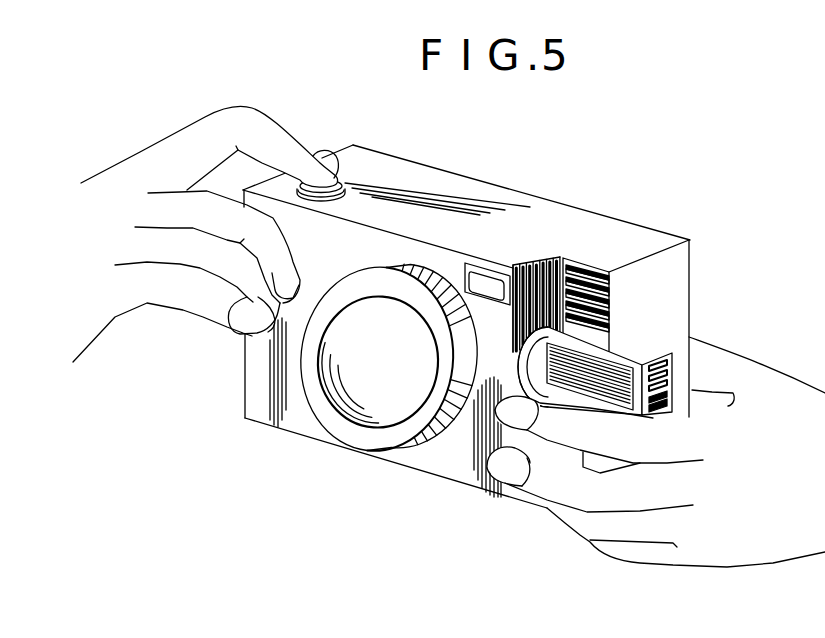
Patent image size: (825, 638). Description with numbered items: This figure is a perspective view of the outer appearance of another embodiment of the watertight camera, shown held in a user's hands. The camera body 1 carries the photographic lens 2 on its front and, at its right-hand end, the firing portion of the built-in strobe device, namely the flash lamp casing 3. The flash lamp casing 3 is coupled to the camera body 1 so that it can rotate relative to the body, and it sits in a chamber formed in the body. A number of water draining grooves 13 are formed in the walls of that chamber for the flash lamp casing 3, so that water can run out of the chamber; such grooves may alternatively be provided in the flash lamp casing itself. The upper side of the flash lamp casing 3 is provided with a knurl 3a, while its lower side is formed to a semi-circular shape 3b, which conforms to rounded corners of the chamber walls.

The camera body 1 is at (567, 210).
The photographic lens 2 is at (398, 417).
The flash lamp casing 3 is at (615, 347).
The knurl 3a is at (667, 372).
The semi-circular shape 3b is at (530, 360).
The water draining grooves 13 is at (543, 280).